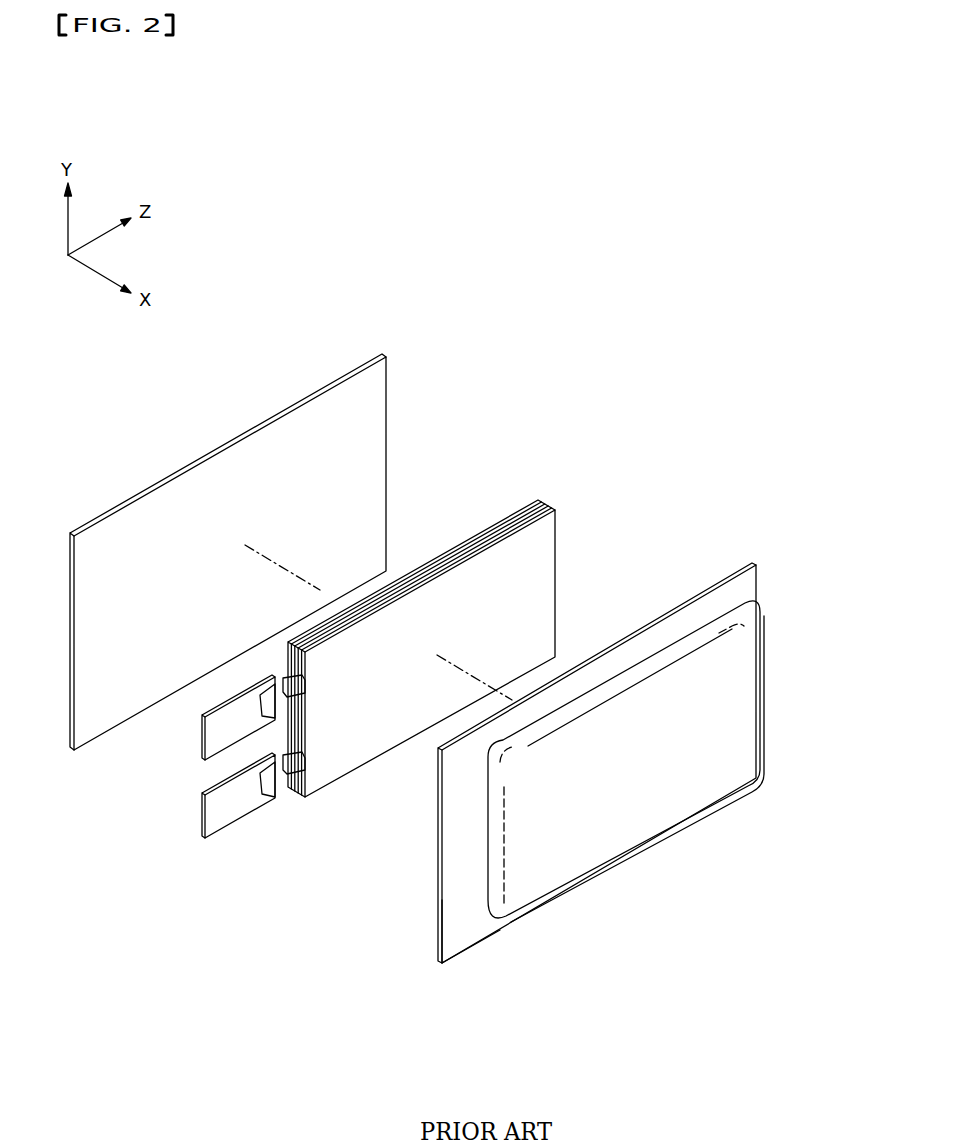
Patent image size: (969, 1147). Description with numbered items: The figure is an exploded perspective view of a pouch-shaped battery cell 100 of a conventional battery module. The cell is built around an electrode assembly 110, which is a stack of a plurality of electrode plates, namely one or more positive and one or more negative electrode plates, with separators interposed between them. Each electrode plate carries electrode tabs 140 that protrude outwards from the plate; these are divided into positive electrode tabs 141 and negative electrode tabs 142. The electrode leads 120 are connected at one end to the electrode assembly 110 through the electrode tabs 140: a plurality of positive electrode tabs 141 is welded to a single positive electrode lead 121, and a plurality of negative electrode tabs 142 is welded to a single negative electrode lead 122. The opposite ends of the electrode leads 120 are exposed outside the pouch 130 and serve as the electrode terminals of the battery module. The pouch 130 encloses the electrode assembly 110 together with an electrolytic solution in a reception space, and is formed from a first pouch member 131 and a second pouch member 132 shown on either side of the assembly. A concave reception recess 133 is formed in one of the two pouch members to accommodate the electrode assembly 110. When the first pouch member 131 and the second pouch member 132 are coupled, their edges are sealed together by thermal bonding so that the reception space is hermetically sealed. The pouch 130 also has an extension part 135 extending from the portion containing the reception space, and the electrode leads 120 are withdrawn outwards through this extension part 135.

The battery cell 100 is at (122, 370).
The electrode assembly 110 is at (375, 727).
The electrode leads 120 is at (152, 767).
The positive electrode lead 121 is at (213, 740).
The negative electrode lead 122 is at (213, 818).
The pouch 130 is at (613, 362).
The first pouch member 131 is at (386, 376).
The second pouch member 132 is at (723, 607).
The concave reception recess 133 is at (626, 821).
The extension part 135 is at (447, 918).
The electrode tabs 140 is at (322, 891).
The positive electrode tabs 141 is at (273, 676).
The negative electrode tabs 142 is at (292, 790).